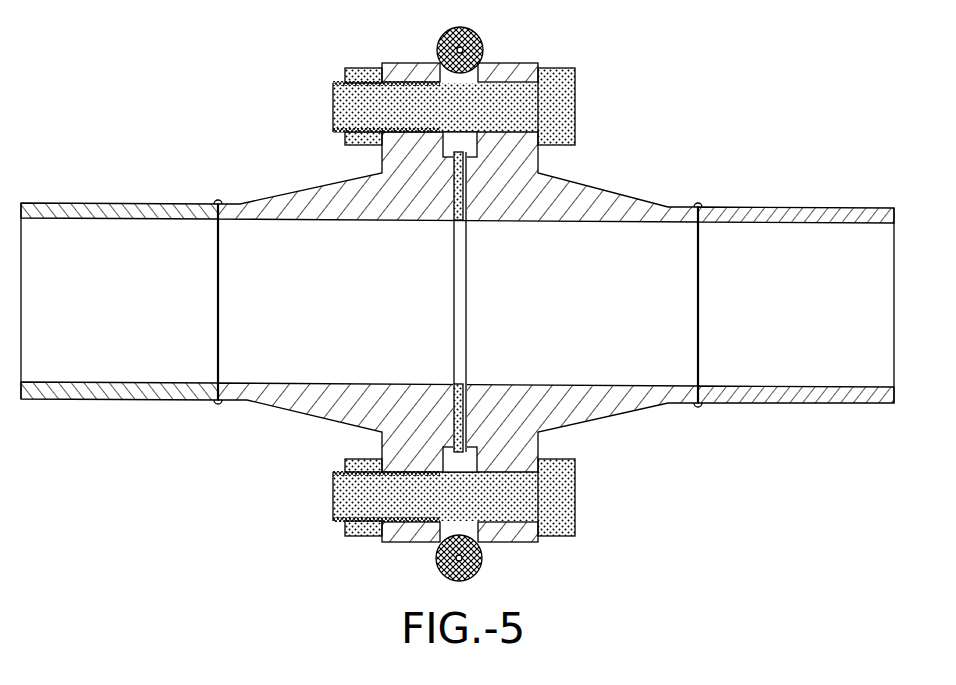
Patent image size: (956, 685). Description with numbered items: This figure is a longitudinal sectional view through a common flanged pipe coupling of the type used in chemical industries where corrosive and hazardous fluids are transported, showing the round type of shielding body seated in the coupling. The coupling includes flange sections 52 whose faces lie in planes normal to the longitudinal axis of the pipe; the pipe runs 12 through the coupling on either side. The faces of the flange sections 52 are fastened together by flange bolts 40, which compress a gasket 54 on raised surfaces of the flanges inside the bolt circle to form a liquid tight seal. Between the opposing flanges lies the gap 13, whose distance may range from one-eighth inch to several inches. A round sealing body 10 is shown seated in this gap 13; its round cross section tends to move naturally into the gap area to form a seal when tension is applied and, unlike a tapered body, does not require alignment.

The round sealing body 10 is at (483, 42).
The pipe 12 is at (455, 375).
The gap 13 is at (458, 456).
The flange bolts 40 is at (575, 99).
The flange sections 52 is at (593, 192).
The gasket 54 is at (467, 222).